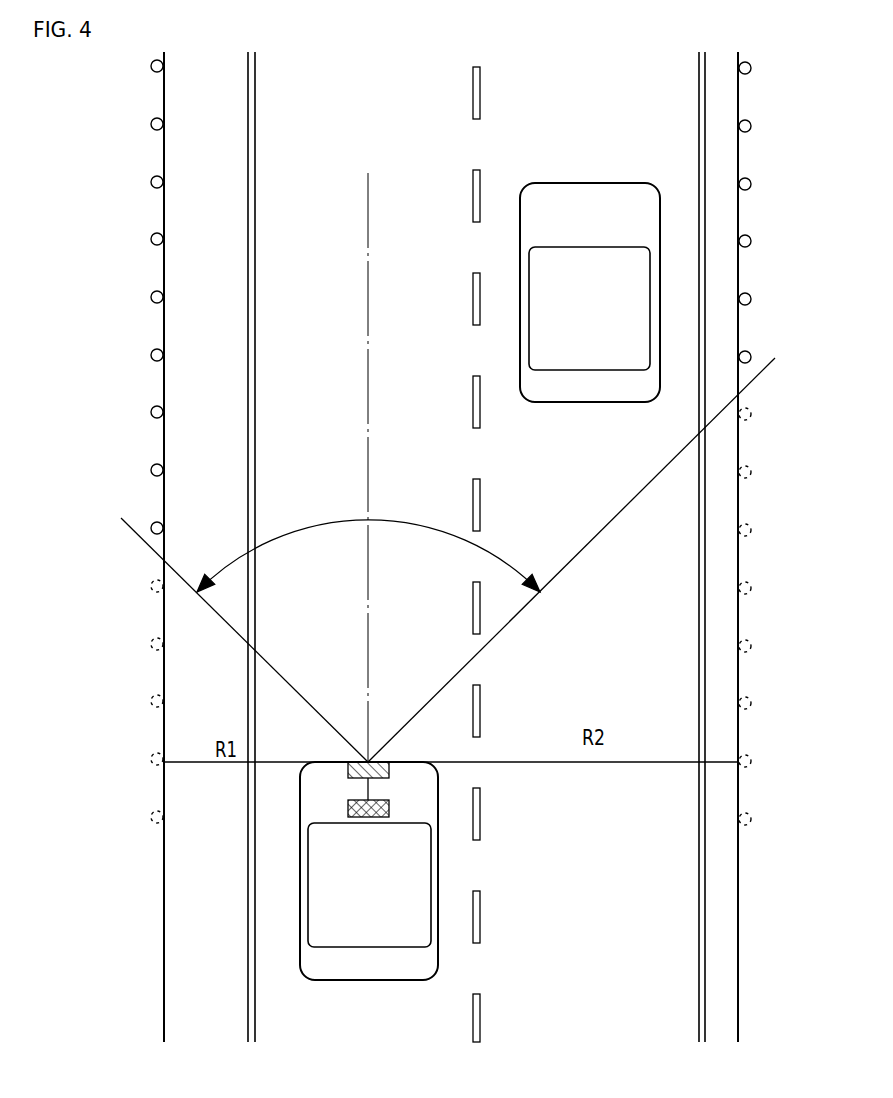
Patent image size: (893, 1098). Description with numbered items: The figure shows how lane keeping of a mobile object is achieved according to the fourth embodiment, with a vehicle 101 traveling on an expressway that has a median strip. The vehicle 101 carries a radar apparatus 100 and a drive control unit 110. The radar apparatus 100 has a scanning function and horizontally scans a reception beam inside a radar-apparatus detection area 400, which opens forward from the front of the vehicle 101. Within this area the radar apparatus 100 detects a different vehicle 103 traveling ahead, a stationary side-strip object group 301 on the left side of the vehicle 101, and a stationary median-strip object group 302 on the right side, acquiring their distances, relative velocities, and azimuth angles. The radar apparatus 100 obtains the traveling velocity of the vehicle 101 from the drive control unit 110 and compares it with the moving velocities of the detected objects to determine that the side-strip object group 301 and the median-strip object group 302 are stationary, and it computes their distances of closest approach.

The stationary side-strip object group 301 is at (147, 173).
The stationary median-strip object group 302 is at (750, 172).
The different vehicle 103 is at (599, 191).
The radar-apparatus detection area 400 is at (448, 560).
The vehicle 101 is at (336, 974).
The radar apparatus 100 is at (348, 770).
The drive control unit 110 is at (348, 808).